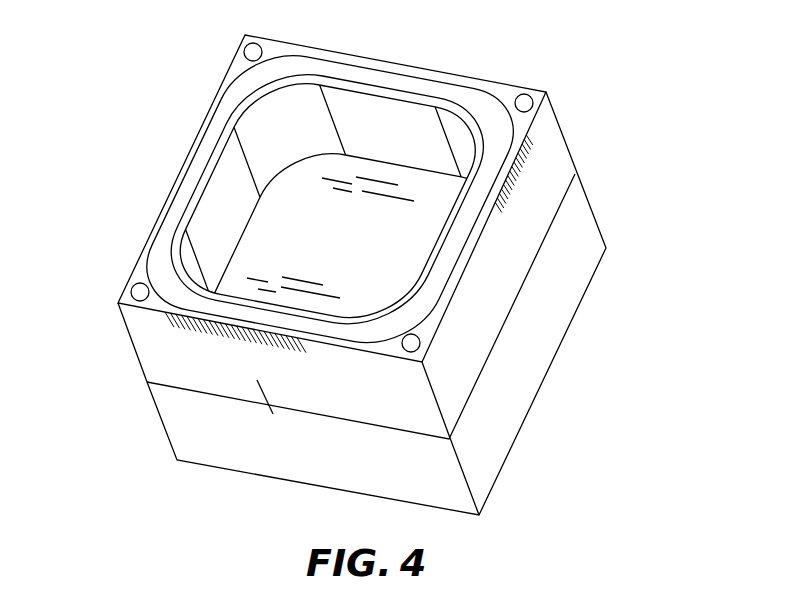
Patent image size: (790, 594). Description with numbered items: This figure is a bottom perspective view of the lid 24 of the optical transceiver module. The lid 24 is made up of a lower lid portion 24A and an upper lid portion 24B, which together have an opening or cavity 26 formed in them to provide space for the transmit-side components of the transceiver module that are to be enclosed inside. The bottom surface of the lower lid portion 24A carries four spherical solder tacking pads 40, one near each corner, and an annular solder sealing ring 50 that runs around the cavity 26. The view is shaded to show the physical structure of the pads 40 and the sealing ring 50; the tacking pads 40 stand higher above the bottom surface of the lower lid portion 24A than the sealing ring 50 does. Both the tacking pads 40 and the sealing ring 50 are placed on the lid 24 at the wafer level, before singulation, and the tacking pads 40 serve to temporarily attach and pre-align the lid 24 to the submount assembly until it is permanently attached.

The lid 24 is at (376, 259).
The lower lid portion 24A is at (552, 150).
The upper lid portion 24B is at (585, 231).
The cavity 26 is at (282, 128).
The solder tacking pads 40 is at (247, 47).
The solder sealing ring 50 is at (196, 161).